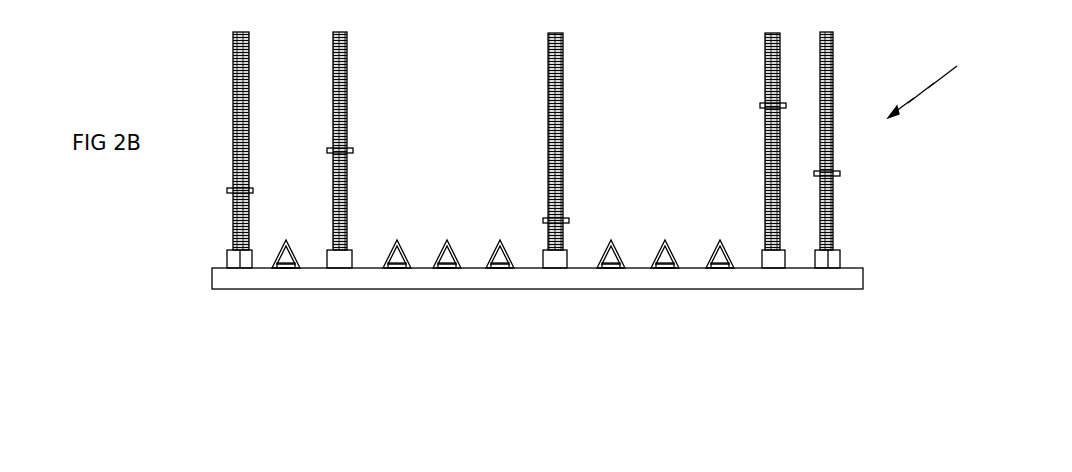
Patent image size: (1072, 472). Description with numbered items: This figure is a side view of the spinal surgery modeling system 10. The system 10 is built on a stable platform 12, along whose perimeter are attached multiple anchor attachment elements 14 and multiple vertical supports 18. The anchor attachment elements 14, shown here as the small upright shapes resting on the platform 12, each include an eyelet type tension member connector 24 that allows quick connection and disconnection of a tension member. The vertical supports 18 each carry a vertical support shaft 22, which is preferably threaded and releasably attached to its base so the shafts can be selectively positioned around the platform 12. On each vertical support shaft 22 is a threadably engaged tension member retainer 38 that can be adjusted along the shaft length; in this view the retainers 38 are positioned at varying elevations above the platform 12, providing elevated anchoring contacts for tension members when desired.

The spinal surgery modeling system 10 is at (935, 82).
The platform 12 is at (850, 277).
The anchor attachment elements 14 is at (290, 270).
The vertical supports 18 is at (248, 57).
The vertical support shaft 22 is at (233, 112).
The tension member connector 24 is at (286, 242).
The tension member retainer 38 is at (250, 187).